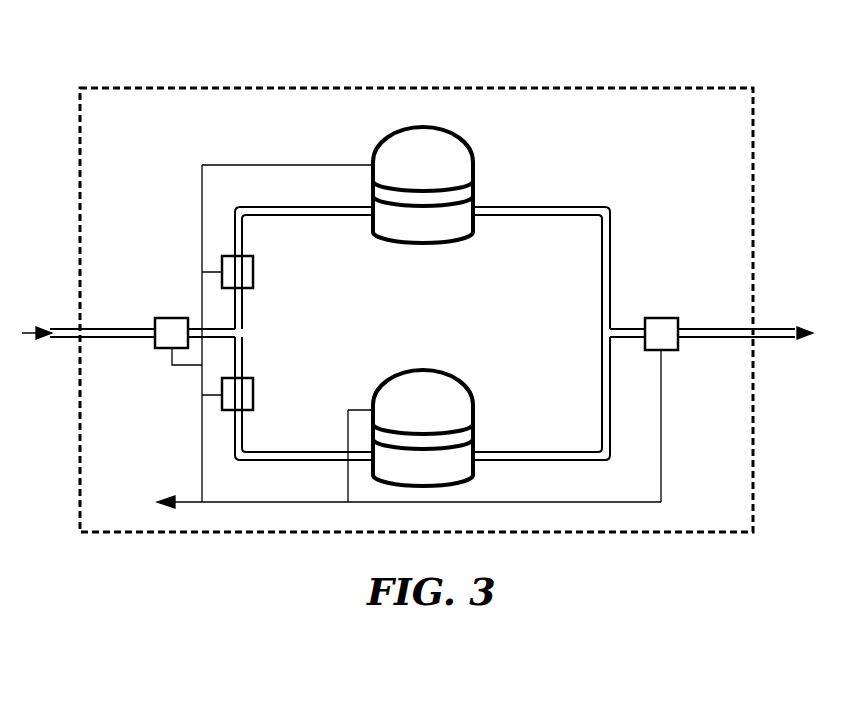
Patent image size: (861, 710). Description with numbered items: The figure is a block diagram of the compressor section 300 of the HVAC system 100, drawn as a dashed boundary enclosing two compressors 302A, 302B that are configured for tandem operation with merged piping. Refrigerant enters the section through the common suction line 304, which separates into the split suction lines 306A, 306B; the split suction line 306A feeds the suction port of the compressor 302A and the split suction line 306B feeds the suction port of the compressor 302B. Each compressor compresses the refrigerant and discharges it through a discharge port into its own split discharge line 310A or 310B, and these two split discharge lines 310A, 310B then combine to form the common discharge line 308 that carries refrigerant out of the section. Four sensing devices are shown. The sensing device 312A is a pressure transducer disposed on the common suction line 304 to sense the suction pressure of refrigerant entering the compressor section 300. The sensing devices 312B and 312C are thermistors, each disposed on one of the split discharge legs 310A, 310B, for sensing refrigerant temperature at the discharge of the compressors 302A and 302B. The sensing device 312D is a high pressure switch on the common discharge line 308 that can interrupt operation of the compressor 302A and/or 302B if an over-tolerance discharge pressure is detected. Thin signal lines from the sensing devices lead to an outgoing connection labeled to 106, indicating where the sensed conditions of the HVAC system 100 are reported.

The HVAC system 100 is at (770, 84).
The compressor section 300 is at (572, 88).
The compressor 302A is at (422, 126).
The compressor 302B is at (422, 369).
The common suction line 304 is at (740, 329).
The split suction line 306A is at (585, 207).
The split suction line 306B is at (585, 452).
The common discharge line 308 is at (95, 329).
The split discharge line 310A is at (268, 207).
The split discharge line 310B is at (268, 452).
The sensing device 312A is at (672, 350).
The sensing device 312B is at (252, 288).
The sensing device 312C is at (255, 378).
The sensing device 312D is at (168, 350).
The controller 106 is at (376, 502).